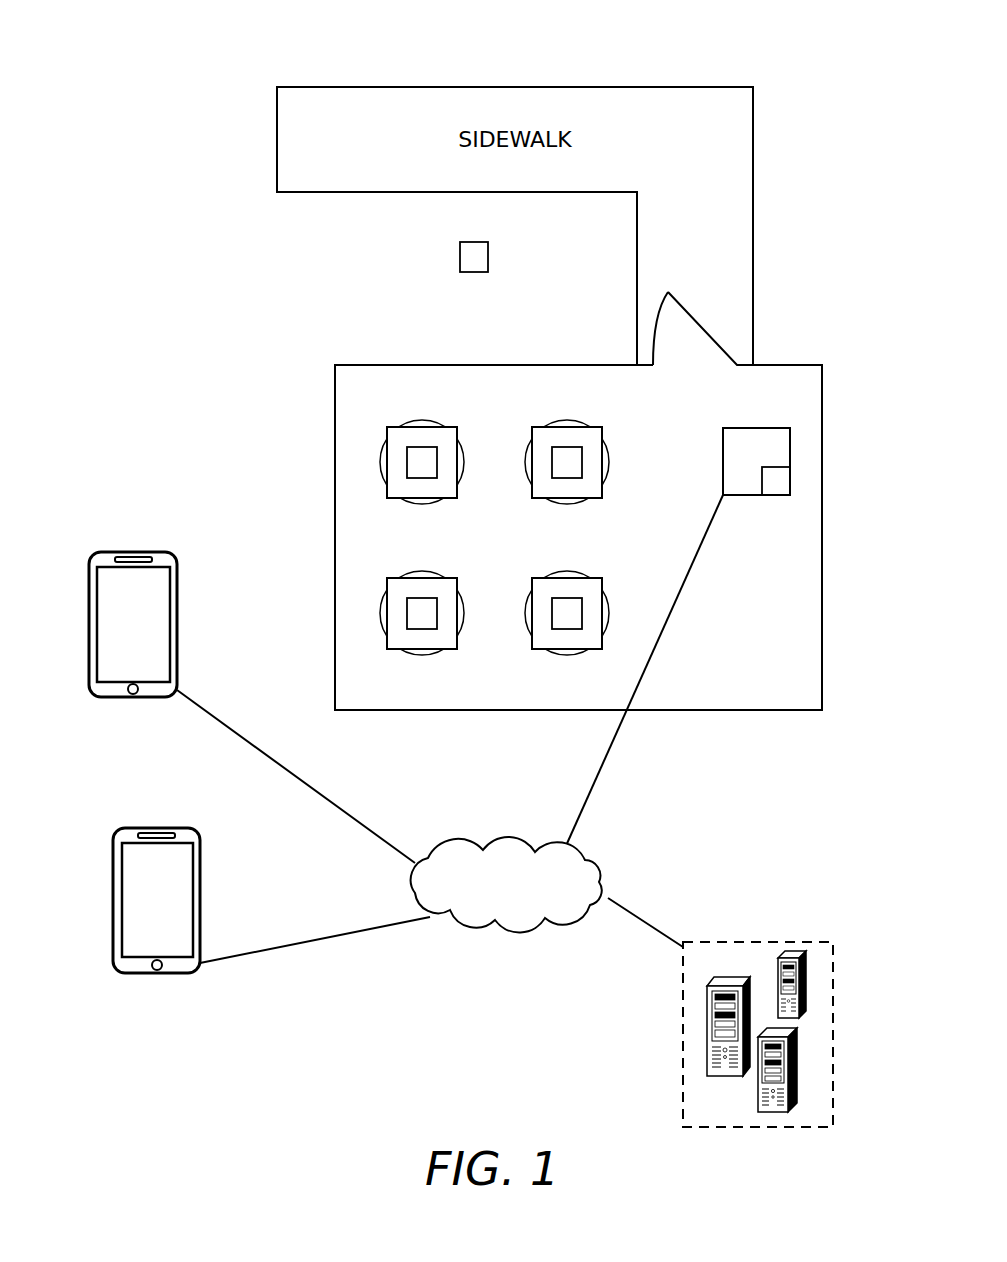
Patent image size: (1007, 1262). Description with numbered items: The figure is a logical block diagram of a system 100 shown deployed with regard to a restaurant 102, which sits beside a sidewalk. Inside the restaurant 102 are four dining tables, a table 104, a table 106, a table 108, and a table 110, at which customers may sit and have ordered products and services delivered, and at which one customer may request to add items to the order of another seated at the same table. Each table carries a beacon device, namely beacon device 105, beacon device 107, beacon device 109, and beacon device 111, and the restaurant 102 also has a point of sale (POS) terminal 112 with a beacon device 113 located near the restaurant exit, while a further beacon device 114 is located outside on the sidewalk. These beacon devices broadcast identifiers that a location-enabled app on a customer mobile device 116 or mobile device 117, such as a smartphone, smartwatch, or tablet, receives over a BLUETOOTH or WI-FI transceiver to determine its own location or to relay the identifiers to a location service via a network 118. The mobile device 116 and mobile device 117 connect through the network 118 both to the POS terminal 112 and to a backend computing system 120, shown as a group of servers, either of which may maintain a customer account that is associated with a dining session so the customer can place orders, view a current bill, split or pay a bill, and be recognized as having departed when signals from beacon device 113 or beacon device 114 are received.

The system 100 is at (765, 52).
The restaurant 102 is at (590, 363).
The dining table 104 is at (450, 427).
The beacon device 105 is at (437, 447).
The table 106 is at (595, 427).
The beacon device 107 is at (582, 447).
The table 108 is at (450, 578).
The beacon device 109 is at (437, 598).
The table 110 is at (595, 578).
The beacon device 111 is at (582, 598).
The point of sale (POS) terminal 112 is at (767, 427).
The beacon device 113 is at (786, 496).
The beacon device 114 is at (466, 240).
The mobile device 116 is at (143, 552).
The mobile device 117 is at (167, 828).
The network 118 is at (603, 858).
The backend computing system 120 is at (760, 942).